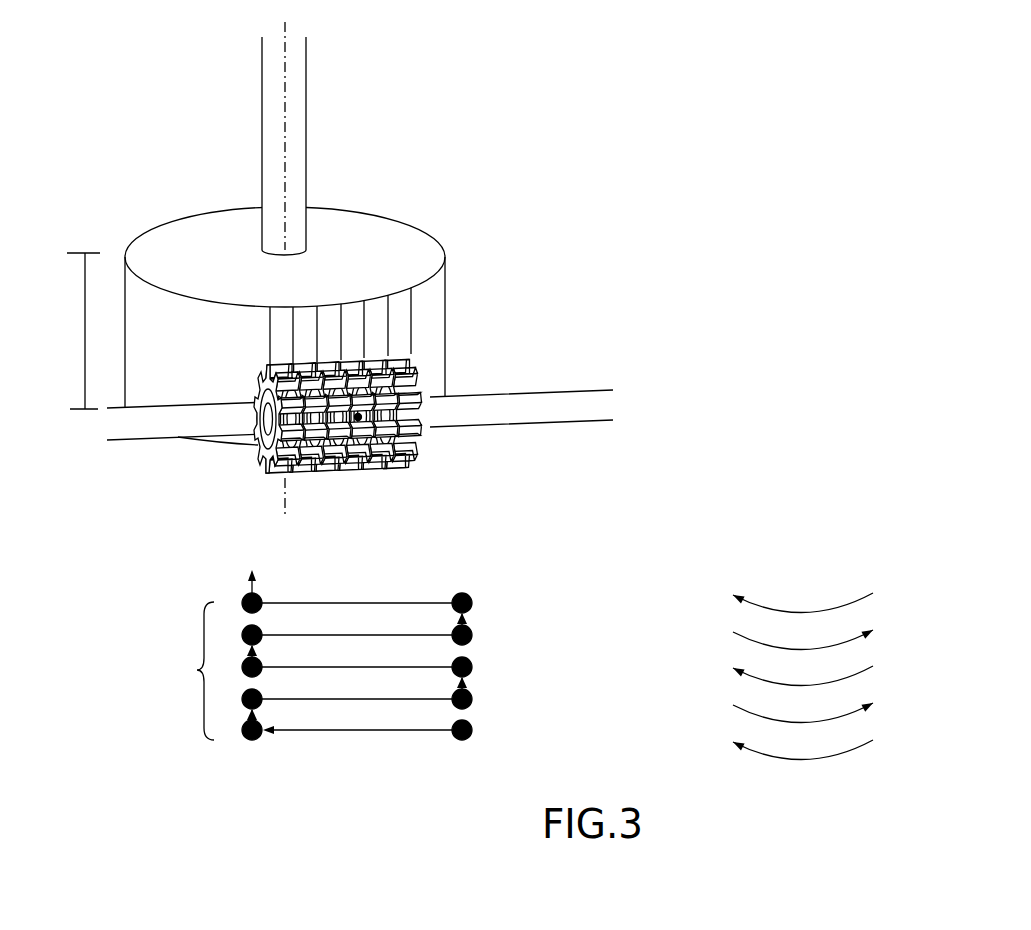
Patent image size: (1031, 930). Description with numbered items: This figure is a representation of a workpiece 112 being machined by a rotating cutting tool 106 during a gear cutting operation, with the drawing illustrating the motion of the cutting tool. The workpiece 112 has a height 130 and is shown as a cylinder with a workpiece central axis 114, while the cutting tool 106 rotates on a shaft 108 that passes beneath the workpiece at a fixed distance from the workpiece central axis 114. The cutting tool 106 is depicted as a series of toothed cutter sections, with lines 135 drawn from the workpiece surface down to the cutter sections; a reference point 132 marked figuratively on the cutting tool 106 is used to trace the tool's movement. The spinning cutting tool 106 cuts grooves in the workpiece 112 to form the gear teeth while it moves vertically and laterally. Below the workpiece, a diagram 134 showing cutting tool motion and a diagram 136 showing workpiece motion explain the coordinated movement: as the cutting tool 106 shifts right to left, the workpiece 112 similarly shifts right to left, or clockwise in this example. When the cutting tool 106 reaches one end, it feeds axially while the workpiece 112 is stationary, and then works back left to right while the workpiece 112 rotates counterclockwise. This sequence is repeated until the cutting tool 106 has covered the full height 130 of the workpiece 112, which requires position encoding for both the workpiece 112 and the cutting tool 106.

The cutting tool 106 is at (417, 443).
The shaft 108 is at (513, 408).
The workpiece 112 is at (186, 242).
The workpiece central axis 114 is at (284, 50).
The height 130 is at (85, 312).
The reference point 132 is at (356, 432).
The diagram showing cutting tool motion 134 is at (356, 733).
The guide plate 135 is at (272, 304).
The diagram showing workpiece motion 136 is at (912, 668).